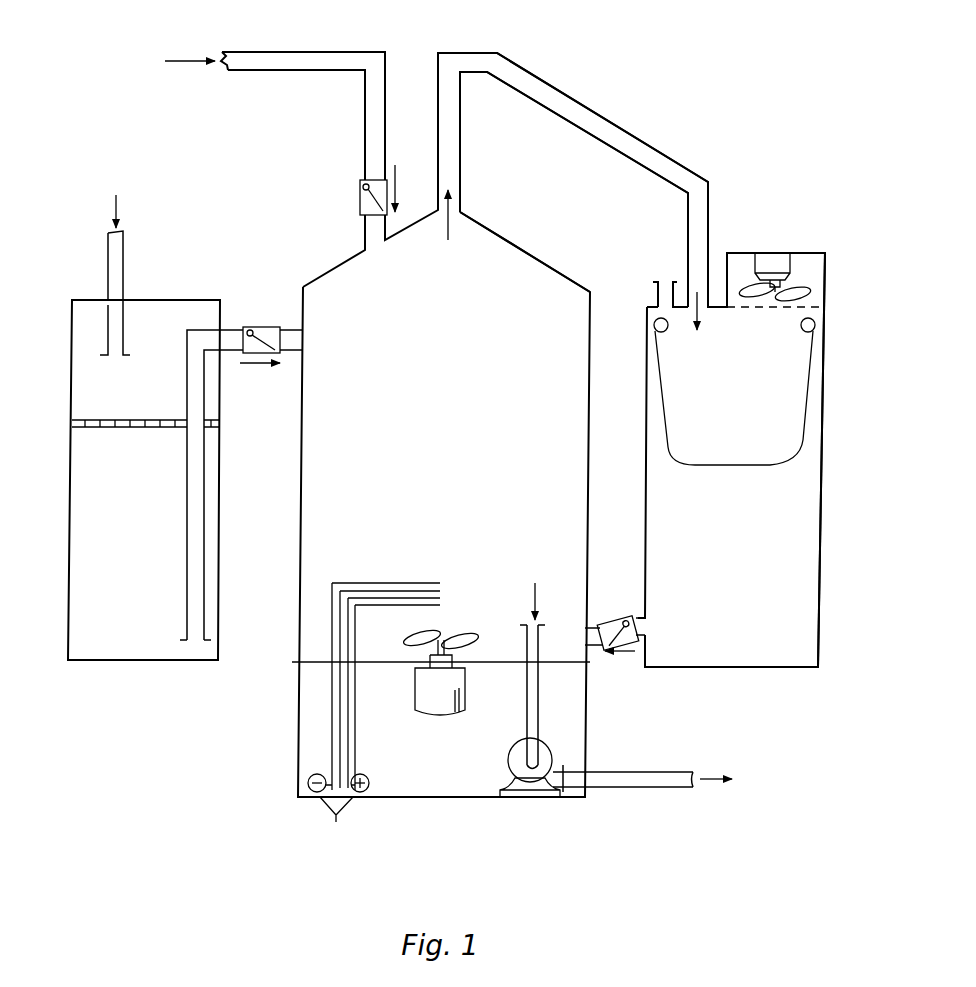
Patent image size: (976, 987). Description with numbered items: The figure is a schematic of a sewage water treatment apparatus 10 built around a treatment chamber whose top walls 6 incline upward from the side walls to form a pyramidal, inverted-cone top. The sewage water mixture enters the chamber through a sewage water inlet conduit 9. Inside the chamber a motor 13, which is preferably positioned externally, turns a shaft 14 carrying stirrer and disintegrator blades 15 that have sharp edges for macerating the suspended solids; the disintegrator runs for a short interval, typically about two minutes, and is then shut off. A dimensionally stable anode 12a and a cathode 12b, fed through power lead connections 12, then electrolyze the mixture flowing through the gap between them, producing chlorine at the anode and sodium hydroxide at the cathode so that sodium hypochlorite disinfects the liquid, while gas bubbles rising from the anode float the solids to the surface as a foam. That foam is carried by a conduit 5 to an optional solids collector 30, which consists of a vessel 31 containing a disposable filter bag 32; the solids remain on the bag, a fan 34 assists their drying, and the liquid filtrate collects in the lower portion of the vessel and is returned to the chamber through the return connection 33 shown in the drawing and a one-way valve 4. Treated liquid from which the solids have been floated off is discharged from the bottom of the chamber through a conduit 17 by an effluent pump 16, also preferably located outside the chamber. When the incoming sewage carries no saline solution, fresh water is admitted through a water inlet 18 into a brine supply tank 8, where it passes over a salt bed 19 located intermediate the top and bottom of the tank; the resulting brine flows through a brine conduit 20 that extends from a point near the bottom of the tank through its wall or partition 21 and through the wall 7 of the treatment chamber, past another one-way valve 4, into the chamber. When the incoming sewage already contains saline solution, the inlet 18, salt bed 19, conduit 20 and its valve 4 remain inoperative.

The one-way valve 4 is at (357, 200).
The conduit 5 is at (580, 103).
The top walls 6 is at (500, 230).
The wall of chamber 7 is at (300, 390).
The brine supply tank 8 is at (158, 662).
The sewage water inlet conduit 9 is at (310, 48).
The sewage water treatment apparatus 10 is at (678, 155).
The power lead connections 12 is at (408, 580).
The dimensionally stable anode 12a is at (418, 605).
The cathode 12b is at (338, 808).
The motor 13 is at (433, 722).
The shaft 14 is at (443, 640).
The stirrer and disintegrator blades 15 is at (473, 630).
The effluent pump 16 is at (553, 752).
The conduit 17 is at (540, 708).
The water inlet 18 is at (127, 267).
The salt bed 19 is at (90, 417).
The brine conduit 20 is at (207, 557).
The wall or partition 21 is at (220, 488).
The solids collector 30 is at (820, 583).
The vessel 31 is at (825, 495).
The disposable filter bag 32 is at (807, 423).
The outlet conduit 33 is at (640, 615).
The fan 34 is at (792, 262).